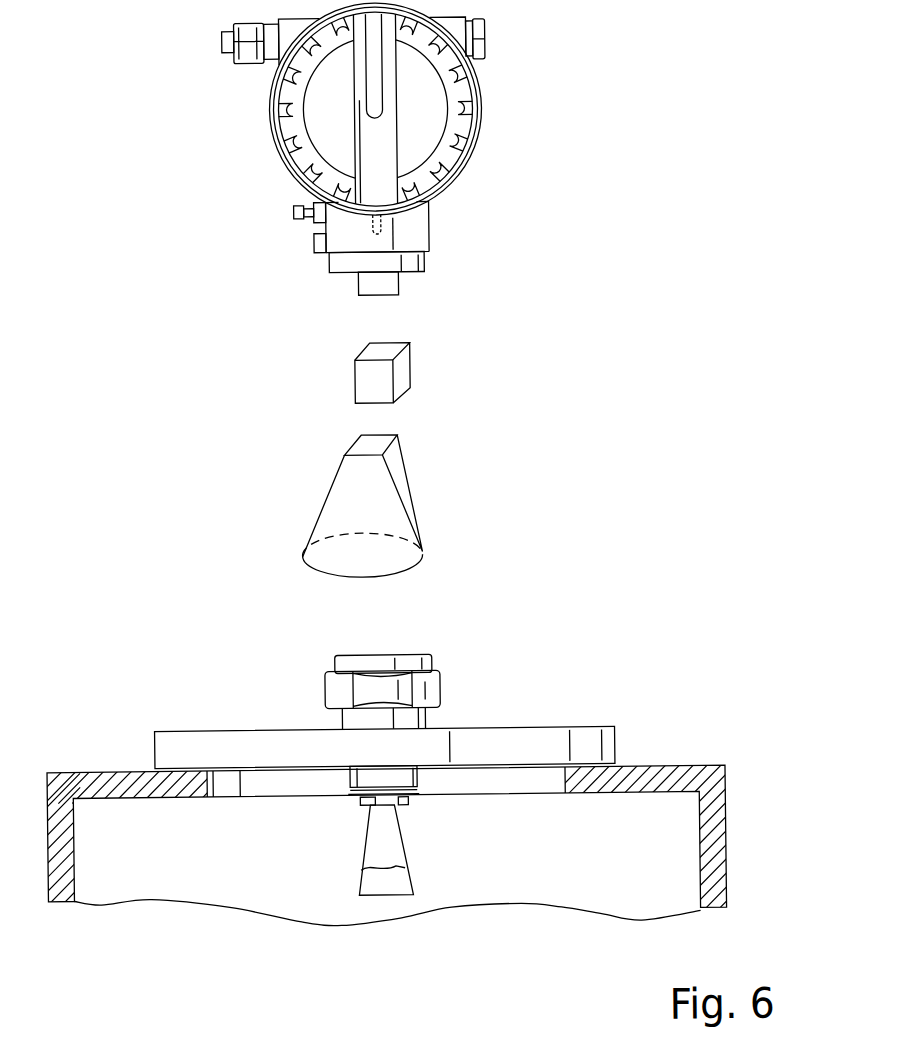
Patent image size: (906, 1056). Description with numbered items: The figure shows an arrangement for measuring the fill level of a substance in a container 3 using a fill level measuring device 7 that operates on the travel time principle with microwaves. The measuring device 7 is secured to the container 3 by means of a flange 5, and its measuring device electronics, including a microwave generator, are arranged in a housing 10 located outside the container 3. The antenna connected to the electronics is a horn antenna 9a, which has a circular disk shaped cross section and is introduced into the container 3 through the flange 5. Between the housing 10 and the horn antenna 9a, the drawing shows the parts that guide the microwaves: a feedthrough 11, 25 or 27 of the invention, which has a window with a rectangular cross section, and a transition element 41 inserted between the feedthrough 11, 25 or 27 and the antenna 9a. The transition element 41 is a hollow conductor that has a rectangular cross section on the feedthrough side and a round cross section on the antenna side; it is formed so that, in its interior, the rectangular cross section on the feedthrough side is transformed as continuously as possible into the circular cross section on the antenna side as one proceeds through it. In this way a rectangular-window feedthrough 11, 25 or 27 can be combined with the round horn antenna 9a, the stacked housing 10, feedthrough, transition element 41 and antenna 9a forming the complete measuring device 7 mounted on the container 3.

The container 3 is at (711, 822).
The flange 5 is at (174, 738).
The fill level measuring device 7 is at (394, 148).
The horn antenna 9a is at (386, 840).
The housing 10 is at (272, 104).
The feedthrough 11 is at (304, 374).
The feedthrough 25 is at (304, 374).
The feedthrough 27 is at (366, 378).
The transition element 41 is at (343, 500).